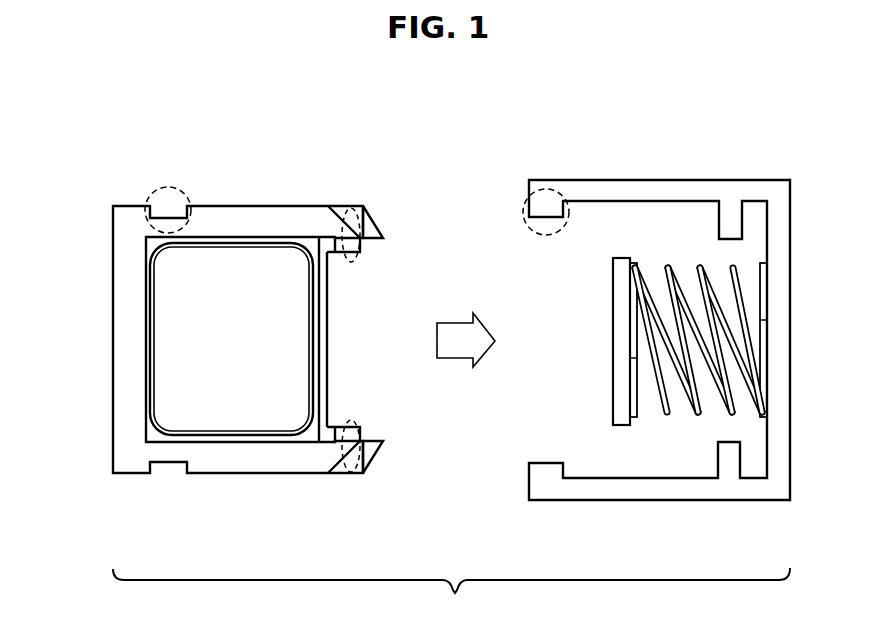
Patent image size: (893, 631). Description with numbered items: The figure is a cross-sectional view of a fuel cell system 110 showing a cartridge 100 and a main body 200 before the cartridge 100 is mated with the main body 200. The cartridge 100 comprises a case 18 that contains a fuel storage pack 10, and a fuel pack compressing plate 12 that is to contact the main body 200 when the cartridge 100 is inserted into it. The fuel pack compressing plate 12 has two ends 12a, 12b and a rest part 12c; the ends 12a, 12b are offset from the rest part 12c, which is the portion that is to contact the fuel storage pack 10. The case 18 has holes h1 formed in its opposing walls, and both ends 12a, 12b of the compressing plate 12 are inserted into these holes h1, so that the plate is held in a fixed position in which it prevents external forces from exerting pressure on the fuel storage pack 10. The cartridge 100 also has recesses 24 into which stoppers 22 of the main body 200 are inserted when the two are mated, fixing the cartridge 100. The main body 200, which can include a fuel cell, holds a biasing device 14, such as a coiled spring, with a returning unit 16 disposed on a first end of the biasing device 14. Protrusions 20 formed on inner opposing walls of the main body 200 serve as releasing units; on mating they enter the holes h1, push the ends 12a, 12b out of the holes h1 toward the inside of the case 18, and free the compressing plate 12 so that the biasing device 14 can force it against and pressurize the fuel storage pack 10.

The cartridge 100 is at (107, 194).
The fuel cell system 110 is at (451, 595).
The main body 200 is at (768, 165).
The fuel storage pack 10 is at (168, 373).
The fuel pack compressing plate 12 is at (345, 342).
The end 12a is at (355, 474).
The end 12b is at (356, 263).
The rest part 12c is at (325, 358).
The biasing device 14 is at (695, 415).
The returning unit 16 is at (618, 275).
The case 18 is at (122, 282).
The protrusion 20 is at (733, 458).
The stopper 22 is at (523, 207).
The recess 24 is at (158, 188).
The hole h1 is at (336, 198).